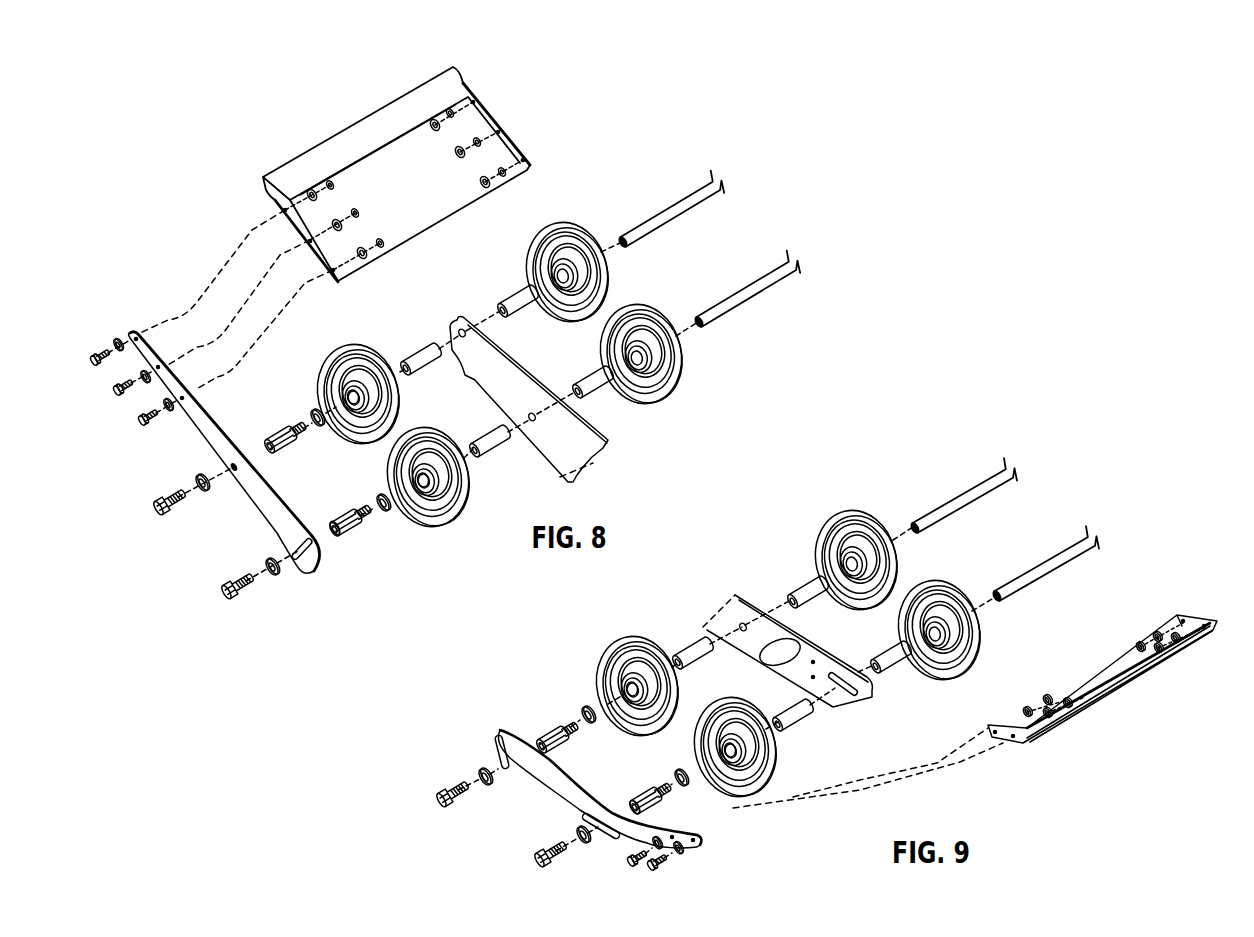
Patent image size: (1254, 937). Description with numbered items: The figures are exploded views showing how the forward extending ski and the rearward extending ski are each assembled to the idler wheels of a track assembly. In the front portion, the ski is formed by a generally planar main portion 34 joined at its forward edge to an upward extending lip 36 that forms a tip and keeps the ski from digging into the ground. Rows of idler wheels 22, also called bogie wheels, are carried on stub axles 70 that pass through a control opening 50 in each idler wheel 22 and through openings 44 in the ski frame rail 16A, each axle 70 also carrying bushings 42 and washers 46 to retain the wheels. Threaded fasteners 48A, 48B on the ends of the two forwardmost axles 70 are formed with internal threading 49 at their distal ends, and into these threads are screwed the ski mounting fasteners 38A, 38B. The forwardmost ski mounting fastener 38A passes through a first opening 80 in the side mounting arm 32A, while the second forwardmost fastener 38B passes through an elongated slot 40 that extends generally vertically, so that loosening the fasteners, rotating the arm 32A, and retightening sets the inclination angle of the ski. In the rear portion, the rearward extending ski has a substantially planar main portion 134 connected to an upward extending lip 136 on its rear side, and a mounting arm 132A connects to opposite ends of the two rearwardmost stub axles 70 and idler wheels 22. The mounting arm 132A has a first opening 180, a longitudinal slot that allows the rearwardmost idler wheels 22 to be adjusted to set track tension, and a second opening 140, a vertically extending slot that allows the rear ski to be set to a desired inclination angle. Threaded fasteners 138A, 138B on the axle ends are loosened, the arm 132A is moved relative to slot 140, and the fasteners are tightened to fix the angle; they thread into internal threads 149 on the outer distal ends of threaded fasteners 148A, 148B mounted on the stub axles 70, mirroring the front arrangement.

In FIG. 8, the ski frame rail 16A is at (602, 430).
In FIG. 9, the ski frame rail 16A is at (873, 692).
In FIG. 8, the idler wheel 22 is at (605, 267).
In FIG. 9, the idler wheel 22 is at (958, 595).
In FIG. 8, the side mounting arm 32A is at (278, 528).
In FIG. 8, the main portion 34 is at (367, 175).
In FIG. 8, the upward extending lip 36 is at (402, 108).
In FIG. 8, the ski mounting fastener 38A is at (166, 510).
In FIG. 8, the ski mounting fastener 38B is at (235, 594).
In FIG. 8, the elongated slot 40 is at (303, 560).
In FIG. 8, the bushing 42 is at (418, 354).
In FIG. 9, the bushing 42 is at (800, 592).
In FIG. 8, the opening 44 is at (458, 318).
In FIG. 8, the washer 46 is at (199, 480).
In FIG. 9, the washer 46 is at (593, 722).
In FIG. 8, the threaded fastener 48A is at (282, 430).
In FIG. 8, the threaded fastener 48B is at (348, 531).
In FIG. 8, the internal threading 49 is at (330, 527).
In FIG. 8, the control opening 50 is at (348, 397).
In FIG. 9, the control opening 50 is at (632, 689).
In FIG. 8, the stub axle 70 is at (744, 293).
In FIG. 9, the stub axle 70 is at (1037, 565).
In FIG. 8, the first opening 80 is at (233, 472).
In FIG. 9, the mounting arm 132A is at (502, 728).
In FIG. 9, the main portion 134 is at (1120, 673).
In FIG. 9, the upward extending lip 136 is at (1113, 685).
In FIG. 9, the threaded fastener 138A is at (543, 860).
In FIG. 9, the threaded fastener 138B is at (440, 793).
In FIG. 9, the second opening 140 is at (498, 748).
In FIG. 9, the threaded fastener 148A is at (552, 728).
In FIG. 9, the threaded fastener 148B is at (657, 806).
In FIG. 9, the internal threads 149 is at (630, 805).
In FIG. 9, the first opening 180 is at (600, 836).